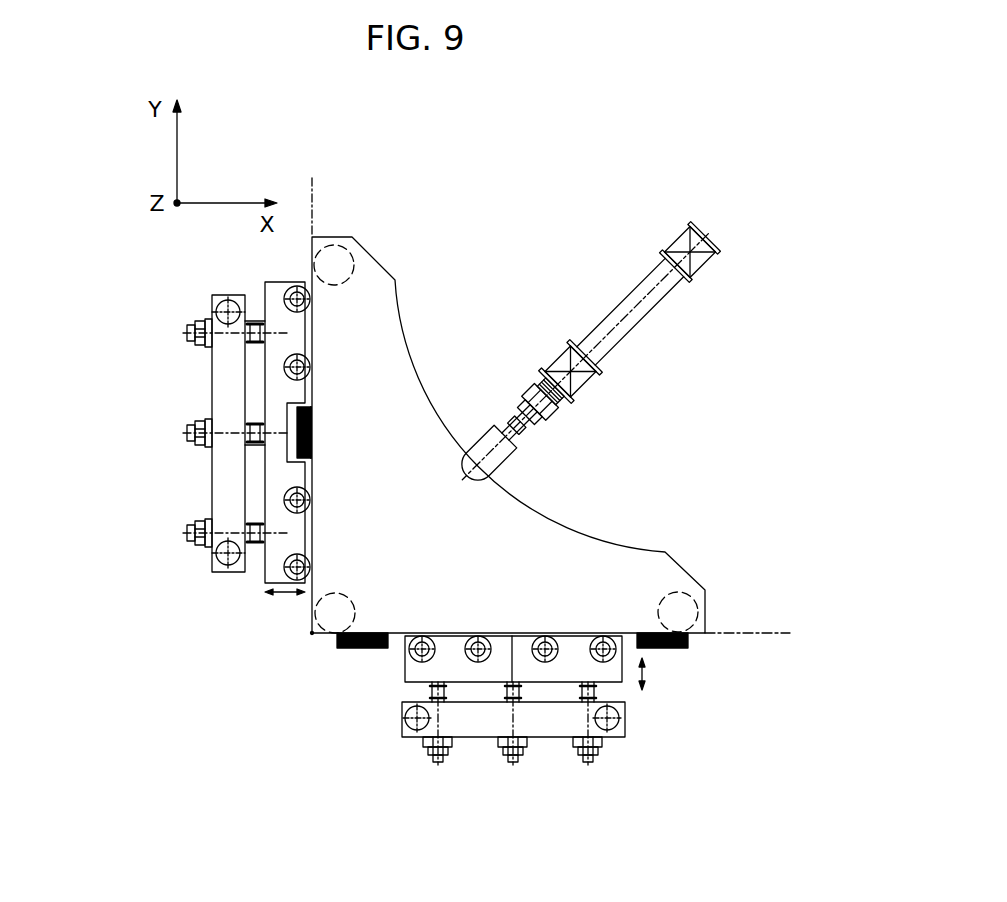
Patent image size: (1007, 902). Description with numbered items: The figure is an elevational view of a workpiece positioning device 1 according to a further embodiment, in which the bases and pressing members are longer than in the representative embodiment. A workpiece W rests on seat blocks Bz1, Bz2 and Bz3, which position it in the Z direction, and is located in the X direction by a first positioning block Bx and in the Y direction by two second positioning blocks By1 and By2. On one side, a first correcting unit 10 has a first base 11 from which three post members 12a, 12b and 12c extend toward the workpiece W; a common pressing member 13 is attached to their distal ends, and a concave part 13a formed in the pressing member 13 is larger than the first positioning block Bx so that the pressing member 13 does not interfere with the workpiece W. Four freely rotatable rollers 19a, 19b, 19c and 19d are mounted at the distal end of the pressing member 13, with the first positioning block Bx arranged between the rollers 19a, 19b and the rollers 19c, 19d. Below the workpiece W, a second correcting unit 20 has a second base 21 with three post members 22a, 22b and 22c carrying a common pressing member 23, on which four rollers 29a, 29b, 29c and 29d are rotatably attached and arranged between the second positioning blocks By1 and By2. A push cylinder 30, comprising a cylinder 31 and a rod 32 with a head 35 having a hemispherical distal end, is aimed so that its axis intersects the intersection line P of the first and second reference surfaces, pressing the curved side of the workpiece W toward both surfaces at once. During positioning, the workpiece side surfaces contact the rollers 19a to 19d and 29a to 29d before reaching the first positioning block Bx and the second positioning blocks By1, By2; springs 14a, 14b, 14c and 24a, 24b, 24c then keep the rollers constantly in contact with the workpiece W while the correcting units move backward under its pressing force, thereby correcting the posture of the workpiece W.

The workpiece positioning device 1 is at (744, 380).
The first correcting unit 10 is at (93, 270).
The first base 11 is at (225, 495).
The post member 12a is at (253, 323).
The post member 12b is at (258, 452).
The post member 12c is at (268, 607).
The pressing member 13 is at (277, 412).
The concave part 13a is at (287, 448).
The spring 14a is at (258, 342).
The spring 14b is at (260, 423).
The spring 14c is at (258, 523).
The roller 19a is at (311, 300).
The roller 19b is at (311, 367).
The roller 19c is at (311, 502).
The roller 19d is at (311, 565).
The second correcting unit 20 is at (410, 784).
The second base 21 is at (618, 737).
The post member 22a is at (453, 745).
The post member 22b is at (528, 745).
The post member 22c is at (644, 692).
The pressing member 23 is at (440, 668).
The spring 24a is at (433, 690).
The spring 24b is at (508, 698).
The spring 24c is at (583, 698).
The roller 29a is at (422, 636).
The roller 29b is at (478, 636).
The roller 29c is at (545, 636).
The roller 29d is at (603, 636).
The push cylinder 30 is at (648, 233).
The cylinder 31 is at (635, 320).
The rod 32 is at (520, 415).
The head 35 is at (492, 438).
The workpiece W is at (380, 287).
The first positioning block Bx is at (312, 428).
The second positioning block By1 is at (343, 650).
The second positioning block By2 is at (690, 642).
The seat block Bz1 is at (335, 262).
The seat block Bz2 is at (327, 613).
The seat block Bz3 is at (690, 602).
The intersection line P is at (312, 636).